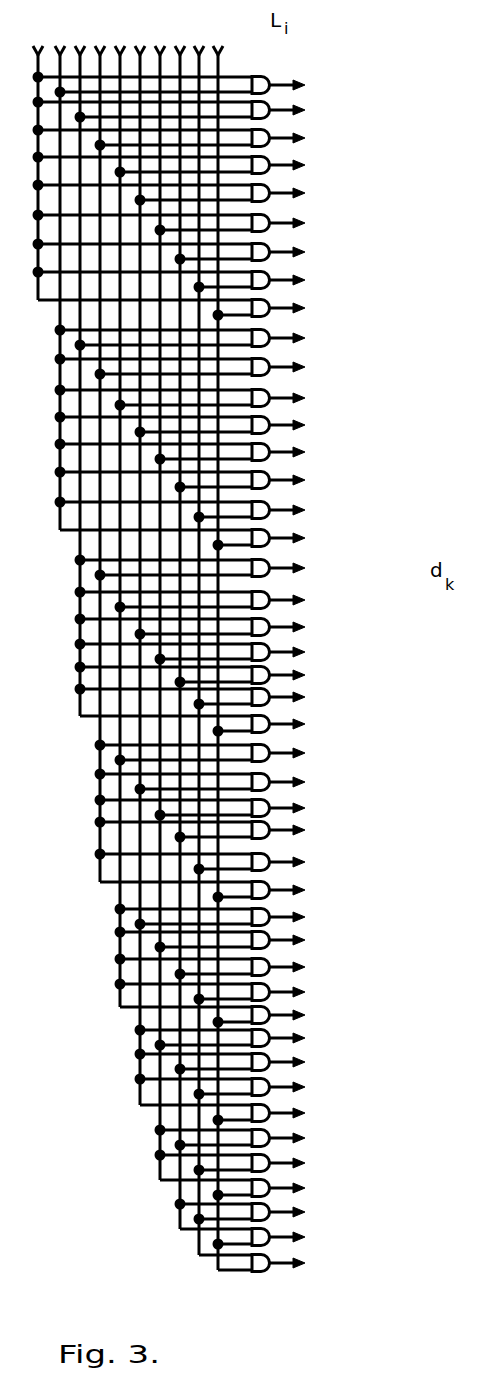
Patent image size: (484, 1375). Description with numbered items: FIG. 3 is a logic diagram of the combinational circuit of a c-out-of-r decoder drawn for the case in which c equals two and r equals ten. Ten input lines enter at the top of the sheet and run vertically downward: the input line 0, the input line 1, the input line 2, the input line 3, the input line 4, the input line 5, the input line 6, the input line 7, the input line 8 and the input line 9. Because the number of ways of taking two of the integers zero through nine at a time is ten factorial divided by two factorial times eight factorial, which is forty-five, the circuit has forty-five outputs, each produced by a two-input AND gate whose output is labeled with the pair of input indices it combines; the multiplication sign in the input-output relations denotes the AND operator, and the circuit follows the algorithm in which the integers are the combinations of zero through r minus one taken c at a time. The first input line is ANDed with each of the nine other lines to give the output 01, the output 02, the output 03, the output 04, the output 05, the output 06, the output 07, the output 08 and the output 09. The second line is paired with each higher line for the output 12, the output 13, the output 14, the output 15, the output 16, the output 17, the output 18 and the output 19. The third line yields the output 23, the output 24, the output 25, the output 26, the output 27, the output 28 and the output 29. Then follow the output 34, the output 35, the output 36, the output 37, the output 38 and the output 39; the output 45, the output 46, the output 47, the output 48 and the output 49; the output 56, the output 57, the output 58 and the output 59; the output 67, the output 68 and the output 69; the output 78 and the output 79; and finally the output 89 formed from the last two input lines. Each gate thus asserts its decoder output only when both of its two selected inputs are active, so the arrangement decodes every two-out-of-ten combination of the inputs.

The input L0 0 is at (34, 156).
The input L1 1 is at (62, 271).
The input L2 2 is at (78, 364).
The input L3 3 is at (96, 447).
The input L4 4 is at (113, 509).
The input L5 5 is at (140, 558).
The input L6 6 is at (157, 596).
The input L7 7 is at (174, 620).
The input L8 8 is at (192, 633).
The input L9 9 is at (218, 641).
The output d01 01 is at (204, 85).
The output d02 02 is at (204, 110).
The output d03 03 is at (204, 138).
The output d04 04 is at (204, 165).
The output d05 05 is at (204, 193).
The output d06 06 is at (204, 223).
The output d07 07 is at (204, 252).
The output d08 08 is at (204, 280).
The output d09 09 is at (206, 308).
The output d12 12 is at (215, 338).
The output d13 13 is at (215, 367).
The output d14 14 is at (215, 398).
The output d15 15 is at (215, 425).
The output d16 16 is at (215, 452).
The output d17 17 is at (215, 480).
The output d18 18 is at (215, 510).
The output d19 19 is at (217, 538).
The output d23 23 is at (225, 568).
The output d24 24 is at (225, 600).
The output d25 25 is at (225, 627).
The output d26 26 is at (225, 652).
The output d27 27 is at (225, 675).
The output d28 28 is at (225, 697).
The output d29 29 is at (227, 724).
The output d34 34 is at (235, 753).
The output d35 35 is at (235, 782).
The output d36 36 is at (235, 808).
The output d37 37 is at (235, 830).
The output d38 38 is at (235, 862).
The output d39 39 is at (237, 890).
The output d45 45 is at (245, 917).
The output d46 46 is at (245, 940).
The output d47 47 is at (245, 967).
The output d48 48 is at (245, 992).
The output d49 49 is at (247, 1015).
The output d56 56 is at (255, 1038).
The output d57 57 is at (255, 1062).
The output d58 58 is at (255, 1087).
The output d59 59 is at (257, 1113).
The output d67 67 is at (265, 1138).
The output d68 68 is at (265, 1163).
The output d69 69 is at (267, 1188).
The output d78 78 is at (275, 1212).
The output d79 79 is at (277, 1237).
The output d89 89 is at (286, 1263).